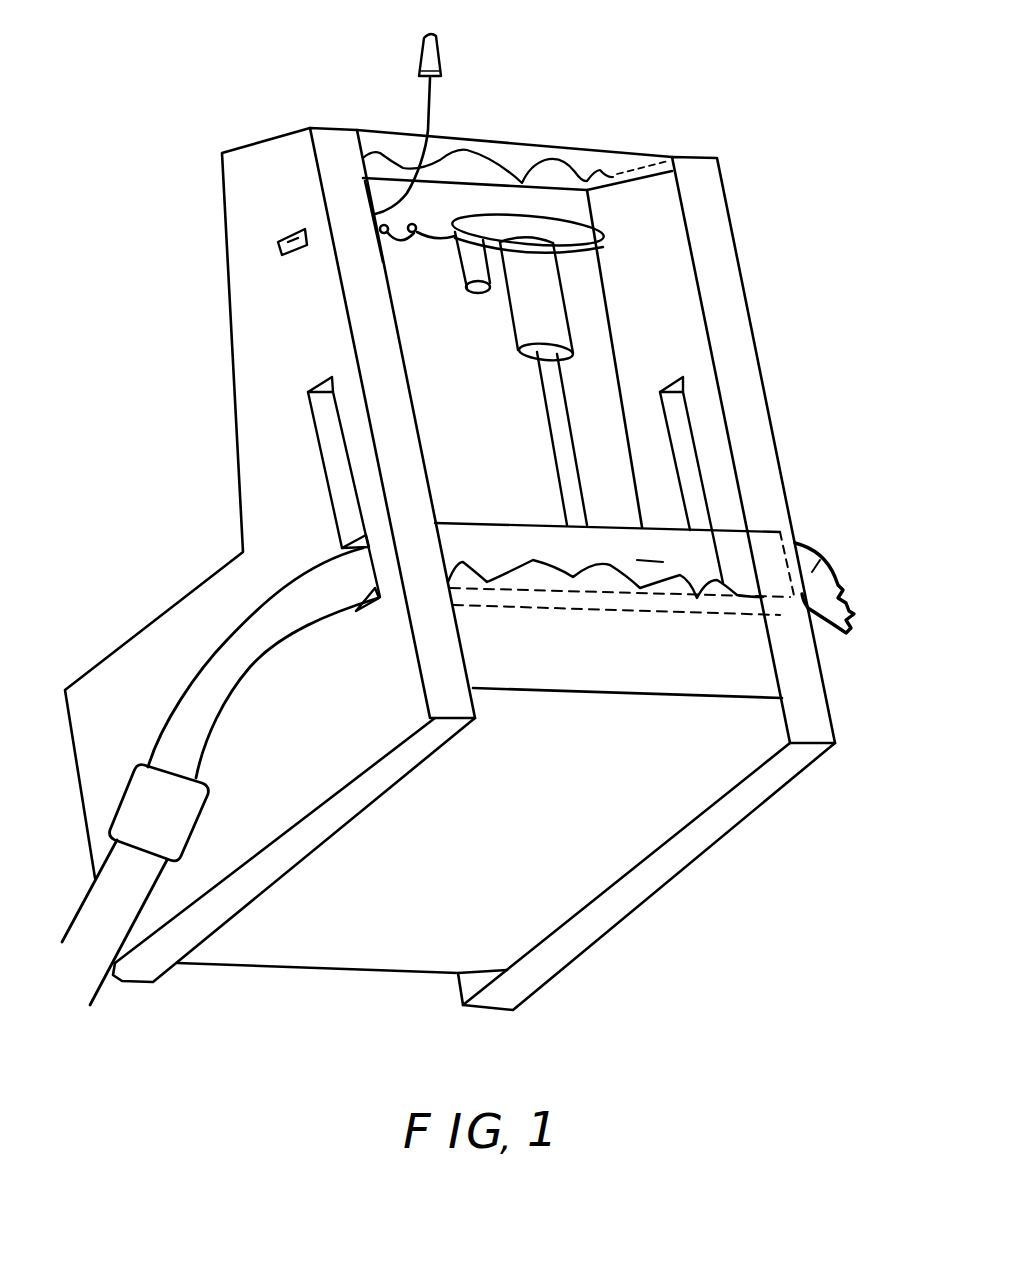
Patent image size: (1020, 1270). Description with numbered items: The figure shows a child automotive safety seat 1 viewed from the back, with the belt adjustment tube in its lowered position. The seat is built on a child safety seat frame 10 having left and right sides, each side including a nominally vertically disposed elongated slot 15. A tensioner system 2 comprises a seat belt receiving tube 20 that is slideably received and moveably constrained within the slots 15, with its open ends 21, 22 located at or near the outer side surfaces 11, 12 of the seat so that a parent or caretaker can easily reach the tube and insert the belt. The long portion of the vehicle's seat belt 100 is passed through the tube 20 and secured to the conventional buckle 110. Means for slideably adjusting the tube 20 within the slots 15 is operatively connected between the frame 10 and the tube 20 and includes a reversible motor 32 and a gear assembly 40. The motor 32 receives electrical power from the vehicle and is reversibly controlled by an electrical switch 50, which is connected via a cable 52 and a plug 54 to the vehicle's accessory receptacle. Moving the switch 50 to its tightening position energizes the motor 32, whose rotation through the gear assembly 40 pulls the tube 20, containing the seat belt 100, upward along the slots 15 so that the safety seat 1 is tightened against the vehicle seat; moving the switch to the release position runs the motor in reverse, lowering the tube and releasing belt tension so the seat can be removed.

The child automotive safety seat 1 is at (767, 143).
The tensioner system 2 is at (614, 301).
The child safety seat frame 10 is at (743, 442).
The outer side surface 11 is at (265, 473).
The outer side surface 12 is at (783, 485).
The elongated slot 15 is at (686, 390).
The seat belt receiving tube 20 is at (460, 545).
The open end 21 is at (343, 542).
The open end 22 is at (803, 597).
The reversible motor 32 is at (480, 291).
The gear assembly 40 is at (583, 300).
The electrical switch 50 is at (283, 262).
The cable 52 is at (432, 107).
The plug 54 is at (443, 50).
The seat belt 100 is at (905, 467).
The buckle 110 is at (173, 813).